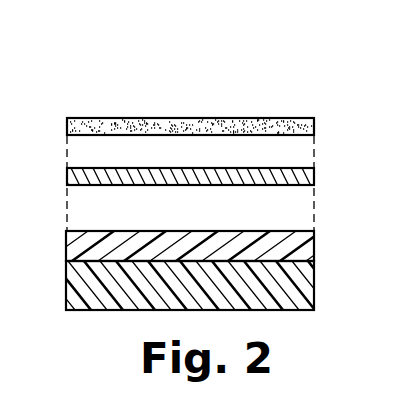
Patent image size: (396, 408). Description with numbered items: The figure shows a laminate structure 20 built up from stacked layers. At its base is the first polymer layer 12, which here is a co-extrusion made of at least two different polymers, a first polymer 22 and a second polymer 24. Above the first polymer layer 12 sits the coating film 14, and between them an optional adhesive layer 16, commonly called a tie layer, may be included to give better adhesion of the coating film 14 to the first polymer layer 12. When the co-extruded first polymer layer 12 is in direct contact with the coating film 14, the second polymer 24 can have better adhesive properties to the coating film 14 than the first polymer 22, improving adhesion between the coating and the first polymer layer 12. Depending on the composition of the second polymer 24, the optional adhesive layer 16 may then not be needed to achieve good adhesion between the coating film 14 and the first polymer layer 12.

The first polymer layer 12 is at (208, 213).
The coating film 14 is at (316, 127).
The adhesive layer 16 is at (316, 180).
The laminate structure 20 is at (235, 97).
The first polymer 22 is at (313, 290).
The second polymer 24 is at (315, 242).